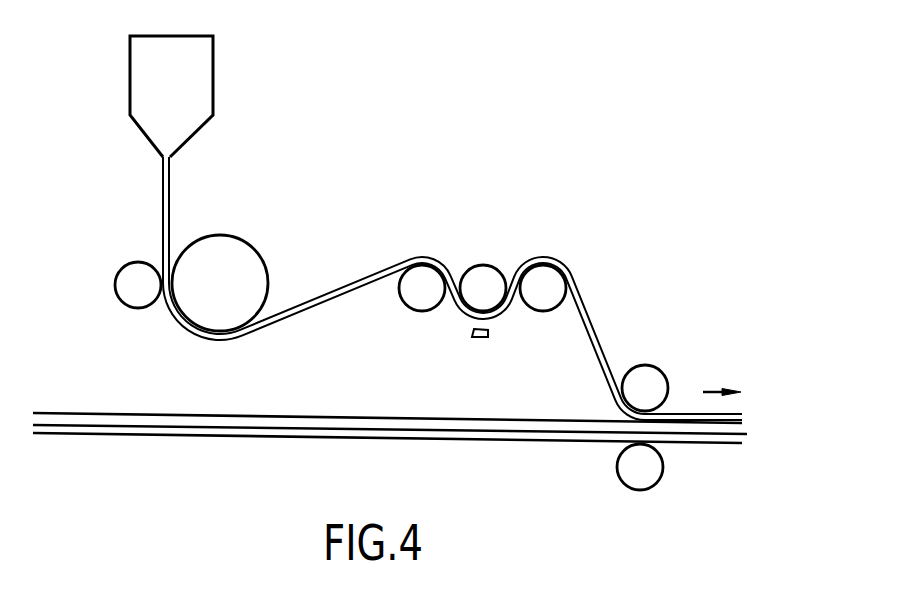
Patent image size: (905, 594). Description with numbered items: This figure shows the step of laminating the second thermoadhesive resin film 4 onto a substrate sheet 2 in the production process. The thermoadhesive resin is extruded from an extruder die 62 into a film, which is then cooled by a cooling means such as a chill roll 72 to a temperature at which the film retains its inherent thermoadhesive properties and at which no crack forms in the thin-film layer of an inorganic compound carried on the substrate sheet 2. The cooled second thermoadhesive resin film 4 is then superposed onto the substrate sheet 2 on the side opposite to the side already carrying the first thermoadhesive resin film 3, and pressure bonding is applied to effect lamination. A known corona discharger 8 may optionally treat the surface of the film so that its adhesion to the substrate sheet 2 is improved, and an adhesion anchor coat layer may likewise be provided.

The substrate sheet 2 is at (138, 424).
The first thermoadhesive resin film 3 is at (260, 438).
The second thermoadhesive resin film 4 is at (162, 215).
The corona discharger 8 is at (472, 338).
The extruder die 62 is at (192, 86).
The casting roller 72 is at (247, 268).